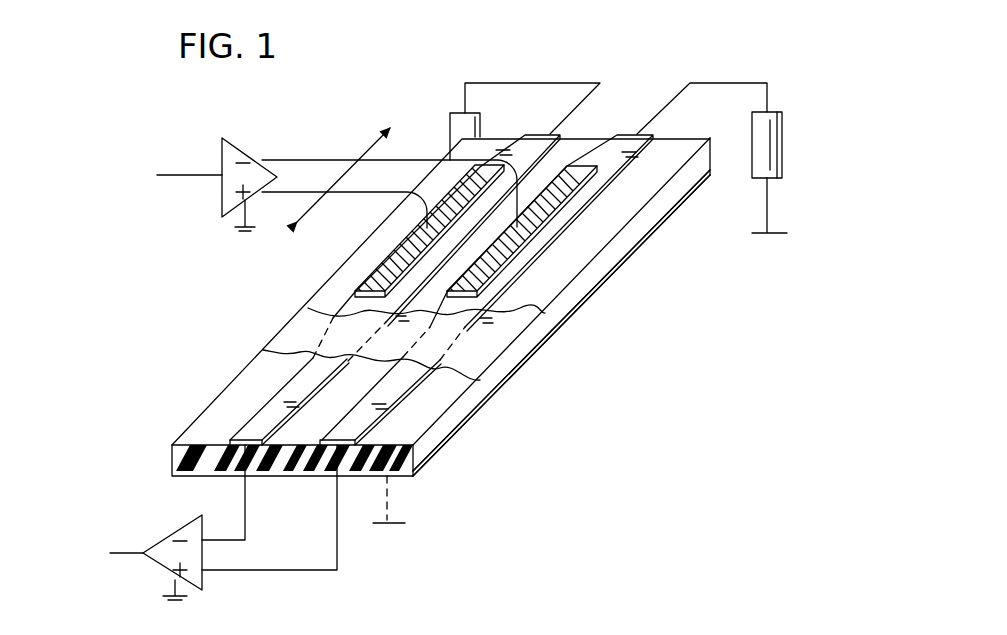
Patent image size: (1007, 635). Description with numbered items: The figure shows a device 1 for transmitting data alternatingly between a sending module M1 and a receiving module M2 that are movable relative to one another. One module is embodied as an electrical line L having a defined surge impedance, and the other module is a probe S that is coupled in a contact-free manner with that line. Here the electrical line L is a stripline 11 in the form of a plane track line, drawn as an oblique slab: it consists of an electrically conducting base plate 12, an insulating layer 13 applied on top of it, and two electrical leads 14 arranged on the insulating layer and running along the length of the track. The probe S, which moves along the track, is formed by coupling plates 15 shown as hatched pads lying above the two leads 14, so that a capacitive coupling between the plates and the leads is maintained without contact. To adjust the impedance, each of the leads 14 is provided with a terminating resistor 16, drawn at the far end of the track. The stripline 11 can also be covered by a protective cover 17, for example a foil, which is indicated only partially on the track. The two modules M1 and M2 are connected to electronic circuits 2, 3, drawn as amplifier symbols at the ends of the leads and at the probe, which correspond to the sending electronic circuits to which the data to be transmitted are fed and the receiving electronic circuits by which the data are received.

The device 1 is at (198, 390).
The differential amplifier 2 is at (167, 574).
The differential amplifier / driver 3 is at (240, 146).
The stripline 11 is at (630, 86).
The electrically conducting base plate 12 is at (430, 462).
The insulating layer 13 is at (470, 405).
The electrical leads 14 is at (303, 382).
The coupling plates 15 is at (372, 274).
The terminating resistors 16 is at (449, 137).
The protective cover 17 is at (498, 340).
The electrical line having defined surge impedance L is at (171, 459).
The sending module M1 is at (672, 279).
The receiving module M2 is at (385, 233).
The probe S is at (570, 205).